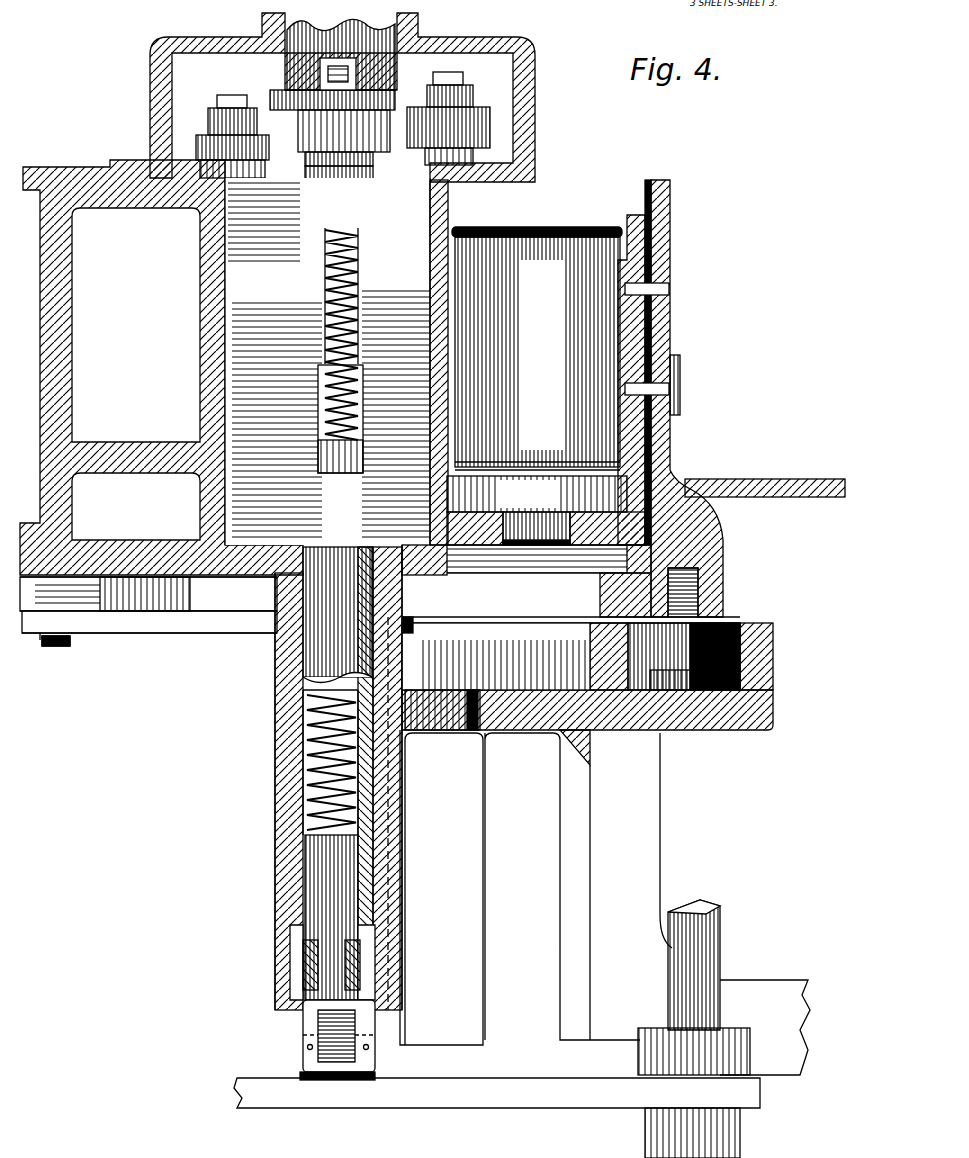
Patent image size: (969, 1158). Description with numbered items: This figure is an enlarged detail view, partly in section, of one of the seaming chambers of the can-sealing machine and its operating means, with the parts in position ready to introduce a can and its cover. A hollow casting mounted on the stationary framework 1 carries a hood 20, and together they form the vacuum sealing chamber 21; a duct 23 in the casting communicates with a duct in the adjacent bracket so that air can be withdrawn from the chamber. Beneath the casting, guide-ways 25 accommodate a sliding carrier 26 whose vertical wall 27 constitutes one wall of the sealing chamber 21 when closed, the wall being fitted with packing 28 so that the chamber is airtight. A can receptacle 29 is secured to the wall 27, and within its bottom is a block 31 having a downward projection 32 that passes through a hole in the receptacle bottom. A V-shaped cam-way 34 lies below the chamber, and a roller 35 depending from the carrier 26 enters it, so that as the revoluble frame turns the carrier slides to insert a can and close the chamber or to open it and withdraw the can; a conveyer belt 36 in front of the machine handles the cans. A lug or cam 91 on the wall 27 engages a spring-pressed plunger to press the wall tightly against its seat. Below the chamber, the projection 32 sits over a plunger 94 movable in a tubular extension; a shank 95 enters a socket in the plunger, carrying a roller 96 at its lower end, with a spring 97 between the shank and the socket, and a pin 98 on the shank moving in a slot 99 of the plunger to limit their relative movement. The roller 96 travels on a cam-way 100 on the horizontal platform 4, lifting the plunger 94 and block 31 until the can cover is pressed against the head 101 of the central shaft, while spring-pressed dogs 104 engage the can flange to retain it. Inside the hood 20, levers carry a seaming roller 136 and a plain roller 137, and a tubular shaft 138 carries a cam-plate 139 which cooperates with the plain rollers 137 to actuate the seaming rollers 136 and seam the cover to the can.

The stationary framework 1 is at (722, 952).
The horizontal platform 4 is at (499, 1110).
The hood 20 is at (342, 97).
The sealing chamber 21 is at (327, 361).
The duct 23 is at (130, 448).
The guide-ways 25 is at (93, 613).
The sliding carrier 26 is at (212, 613).
The vertical wall 27 is at (671, 264).
The packing 28 is at (645, 192).
The can receptacle 29 is at (628, 220).
The block 31 is at (537, 494).
The downward projection 32 is at (526, 546).
The V-shaped cam-way 34 is at (592, 666).
The roller 35 is at (717, 592).
The conveyer belt 36 is at (765, 477).
The lug or cam 91 is at (680, 383).
The plunger 94 is at (350, 548).
The shank 95 is at (355, 870).
The roller 96 is at (303, 1045).
The spring 97 is at (305, 748).
The pin 98 is at (300, 945).
The slot 99 is at (372, 960).
The cam-way 100 is at (376, 1078).
The head 101 is at (380, 212).
The spring-pressed dogs 104 is at (323, 448).
The seaming roller 136 is at (200, 148).
The plain roller 137 is at (482, 120).
The tubular shaft 138 is at (335, 184).
The cam-plate 139 is at (302, 136).